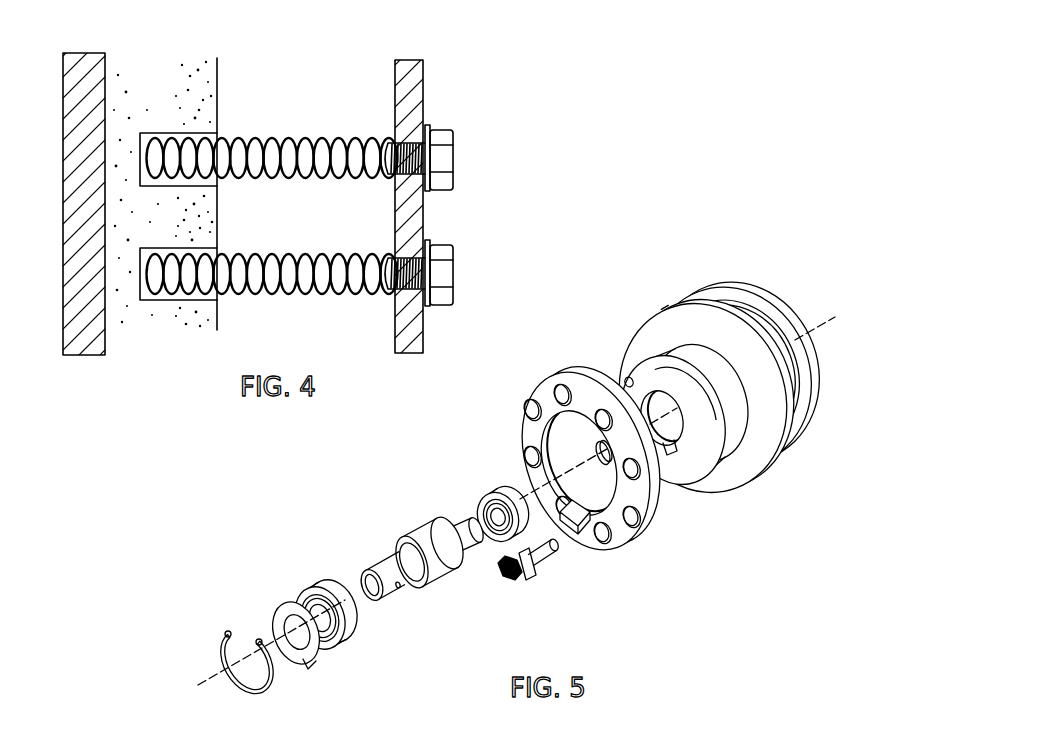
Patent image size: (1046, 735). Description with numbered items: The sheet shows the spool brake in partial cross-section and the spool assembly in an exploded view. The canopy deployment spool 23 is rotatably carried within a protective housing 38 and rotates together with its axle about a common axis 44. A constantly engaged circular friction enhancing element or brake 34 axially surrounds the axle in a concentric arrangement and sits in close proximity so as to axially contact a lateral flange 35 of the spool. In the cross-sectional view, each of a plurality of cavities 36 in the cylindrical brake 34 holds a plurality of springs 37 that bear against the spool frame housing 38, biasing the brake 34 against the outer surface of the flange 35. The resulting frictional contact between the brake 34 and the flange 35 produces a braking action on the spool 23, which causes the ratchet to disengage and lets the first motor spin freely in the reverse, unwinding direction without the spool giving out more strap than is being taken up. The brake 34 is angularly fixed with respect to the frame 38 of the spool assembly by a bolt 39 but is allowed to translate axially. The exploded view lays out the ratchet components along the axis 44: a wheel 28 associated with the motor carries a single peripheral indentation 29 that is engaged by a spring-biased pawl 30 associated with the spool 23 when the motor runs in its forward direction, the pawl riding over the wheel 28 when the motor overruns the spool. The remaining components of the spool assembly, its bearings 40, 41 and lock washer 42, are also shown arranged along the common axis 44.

In FIG. 5, the canopy deployment spool 23 is at (718, 379).
In FIG. 5, the wheel 28 is at (423, 528).
In FIG. 5, the peripheral indentation 29 is at (390, 550).
In FIG. 5, the spring-biased pawl 30 is at (564, 518).
In FIG. 4, the brake 34 is at (217, 112).
In FIG. 5, the brake 34 is at (591, 463).
In FIG. 4, the lateral flange 35 is at (84, 346).
In FIG. 5, the lateral flange 35 is at (637, 338).
In FIG. 4, the cavities 36 is at (167, 132).
In FIG. 4, the springs 37 is at (315, 137).
In FIG. 4, the protective housing 38 is at (417, 102).
In FIG. 5, the bolt 39 is at (533, 567).
In FIG. 5, the bearing 40 is at (317, 582).
In FIG. 5, the bearing 41 is at (497, 486).
In FIG. 5, the lock washer 42 is at (230, 631).
In FIG. 5, the common axis 44 is at (213, 672).